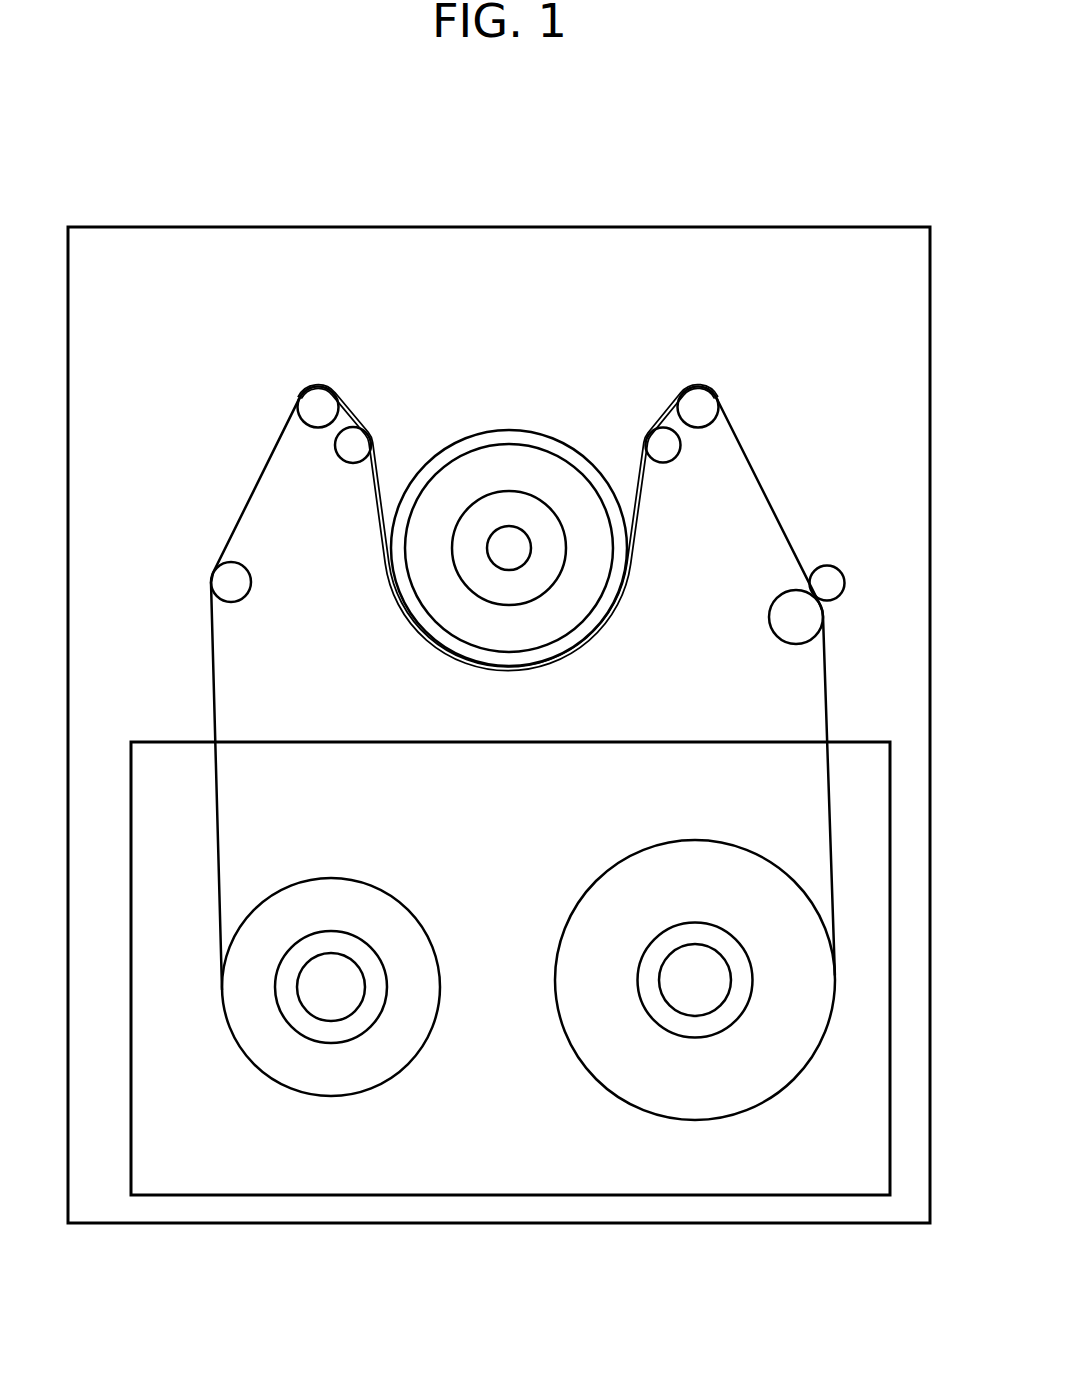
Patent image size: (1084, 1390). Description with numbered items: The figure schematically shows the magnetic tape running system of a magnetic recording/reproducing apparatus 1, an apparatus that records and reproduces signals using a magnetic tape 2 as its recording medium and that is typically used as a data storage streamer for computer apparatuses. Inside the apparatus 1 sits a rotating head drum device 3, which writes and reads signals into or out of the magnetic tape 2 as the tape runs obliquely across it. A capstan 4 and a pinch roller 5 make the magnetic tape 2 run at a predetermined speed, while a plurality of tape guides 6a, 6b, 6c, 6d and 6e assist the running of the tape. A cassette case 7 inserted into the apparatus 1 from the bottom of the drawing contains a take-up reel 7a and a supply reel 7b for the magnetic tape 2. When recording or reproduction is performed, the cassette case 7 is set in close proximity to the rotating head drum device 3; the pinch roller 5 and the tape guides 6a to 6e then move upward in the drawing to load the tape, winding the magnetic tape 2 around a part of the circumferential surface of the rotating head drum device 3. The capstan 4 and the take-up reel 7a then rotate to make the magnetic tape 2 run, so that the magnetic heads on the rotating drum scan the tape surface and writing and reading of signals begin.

The magnetic recording/reproducing apparatus 1 is at (417, 227).
The magnetic tape 2 is at (755, 472).
The rotating head drum device 3 is at (457, 437).
The capstan 4 is at (830, 567).
The pinch roller 5 is at (778, 643).
The tape guide 6a is at (697, 387).
The tape guide 6b is at (670, 463).
The tape guide 6c is at (347, 466).
The tape guide 6d is at (308, 387).
The tape guide 6e is at (248, 597).
The cassette case 7 is at (478, 1195).
The take-up reel 7a is at (703, 1037).
The supply reel 7b is at (327, 1042).